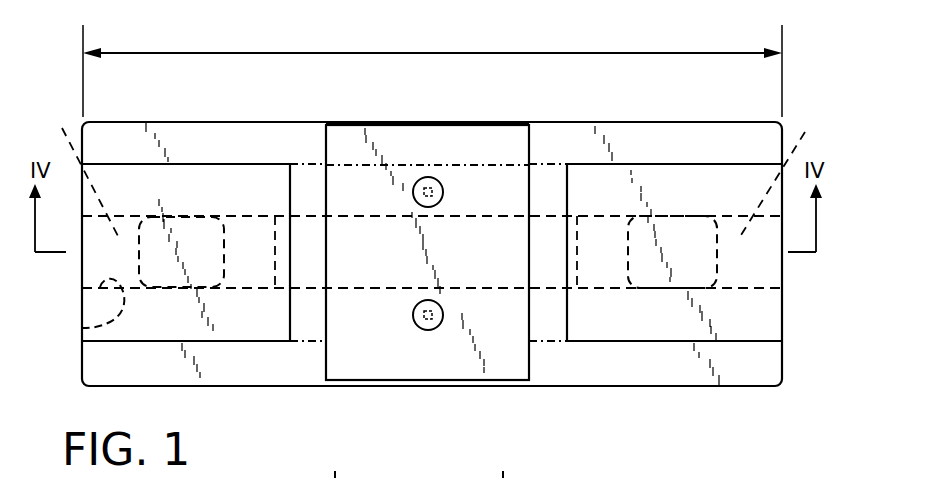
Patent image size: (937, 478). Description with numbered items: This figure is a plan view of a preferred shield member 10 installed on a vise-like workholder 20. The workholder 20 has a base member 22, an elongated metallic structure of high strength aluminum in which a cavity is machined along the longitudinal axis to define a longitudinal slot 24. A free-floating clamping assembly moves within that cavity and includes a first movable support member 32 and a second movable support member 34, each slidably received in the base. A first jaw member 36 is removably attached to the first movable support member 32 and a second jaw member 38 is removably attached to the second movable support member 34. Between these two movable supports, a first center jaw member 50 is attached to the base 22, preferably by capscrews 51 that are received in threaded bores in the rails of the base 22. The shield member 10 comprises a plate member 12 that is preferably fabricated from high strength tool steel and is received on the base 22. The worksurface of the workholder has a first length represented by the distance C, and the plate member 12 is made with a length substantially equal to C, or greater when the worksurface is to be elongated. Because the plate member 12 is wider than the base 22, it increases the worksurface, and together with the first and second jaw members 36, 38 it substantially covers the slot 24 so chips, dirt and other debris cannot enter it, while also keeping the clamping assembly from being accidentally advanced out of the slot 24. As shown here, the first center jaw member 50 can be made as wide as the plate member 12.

The shield member 10 is at (607, 118).
The plate member 12 is at (693, 137).
The vise-like workholder 20 is at (793, 100).
The base member 22 is at (763, 313).
The longitudinal slot 24 is at (82, 328).
The first movable support member 32 is at (76, 177).
The second movable support member 34 is at (790, 178).
The first jaw member 36 is at (199, 203).
The second jaw member 38 is at (667, 335).
The first center jaw member 50 is at (495, 145).
The capscrews 51 is at (428, 177).
The first length C is at (432, 68).